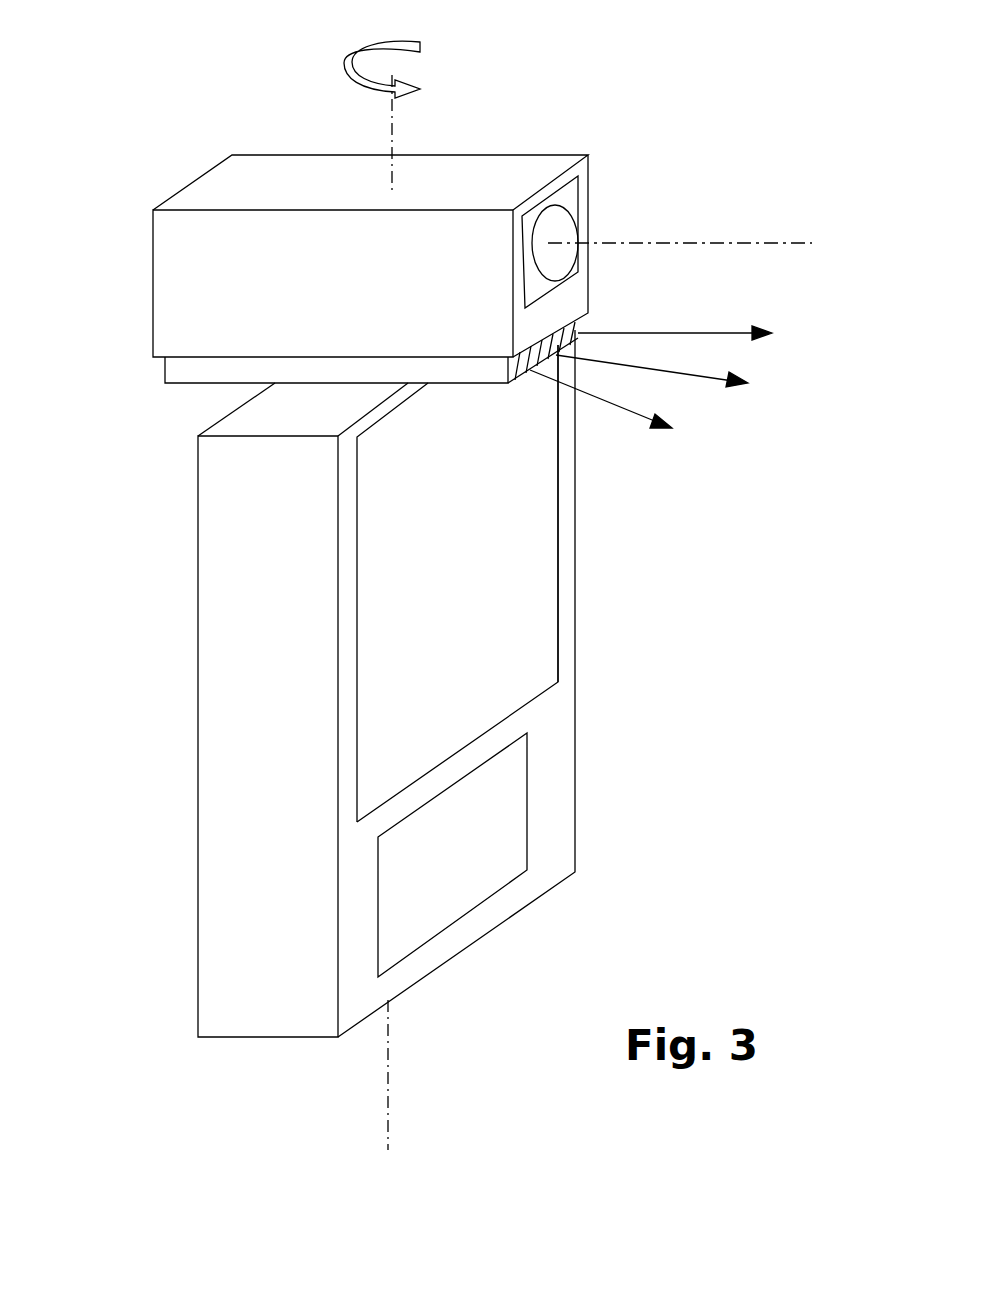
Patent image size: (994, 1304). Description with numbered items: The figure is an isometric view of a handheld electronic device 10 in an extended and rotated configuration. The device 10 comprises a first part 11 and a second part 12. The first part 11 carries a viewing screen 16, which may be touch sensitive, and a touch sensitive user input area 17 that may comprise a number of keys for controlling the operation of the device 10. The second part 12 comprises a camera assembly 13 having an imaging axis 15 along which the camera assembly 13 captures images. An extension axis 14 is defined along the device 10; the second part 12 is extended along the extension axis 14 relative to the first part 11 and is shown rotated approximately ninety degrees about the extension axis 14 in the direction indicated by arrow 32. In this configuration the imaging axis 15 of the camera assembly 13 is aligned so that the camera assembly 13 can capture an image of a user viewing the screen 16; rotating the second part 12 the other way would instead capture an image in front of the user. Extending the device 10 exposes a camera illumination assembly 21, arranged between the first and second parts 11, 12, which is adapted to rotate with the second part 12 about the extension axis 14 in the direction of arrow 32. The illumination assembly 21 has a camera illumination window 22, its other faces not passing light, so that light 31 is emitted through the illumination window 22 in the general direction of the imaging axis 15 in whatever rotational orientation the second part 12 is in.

The handheld electronic device 10 is at (708, 145).
The first part 11 is at (576, 558).
The second part 12 is at (567, 156).
The camera assembly 13 is at (577, 195).
The extension axis 14 is at (392, 157).
The imaging axis 15 is at (788, 243).
The viewing screen 16 is at (456, 575).
The touch sensitive user input area 17 is at (468, 868).
The camera illumination assembly 21 is at (165, 381).
The camera illumination window 22 is at (575, 327).
The light 31 is at (620, 403).
The arrow 32 is at (382, 52).